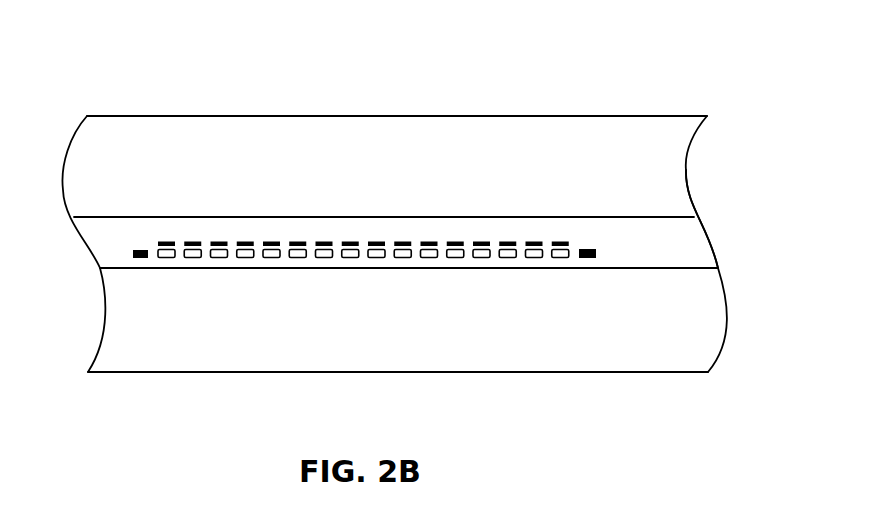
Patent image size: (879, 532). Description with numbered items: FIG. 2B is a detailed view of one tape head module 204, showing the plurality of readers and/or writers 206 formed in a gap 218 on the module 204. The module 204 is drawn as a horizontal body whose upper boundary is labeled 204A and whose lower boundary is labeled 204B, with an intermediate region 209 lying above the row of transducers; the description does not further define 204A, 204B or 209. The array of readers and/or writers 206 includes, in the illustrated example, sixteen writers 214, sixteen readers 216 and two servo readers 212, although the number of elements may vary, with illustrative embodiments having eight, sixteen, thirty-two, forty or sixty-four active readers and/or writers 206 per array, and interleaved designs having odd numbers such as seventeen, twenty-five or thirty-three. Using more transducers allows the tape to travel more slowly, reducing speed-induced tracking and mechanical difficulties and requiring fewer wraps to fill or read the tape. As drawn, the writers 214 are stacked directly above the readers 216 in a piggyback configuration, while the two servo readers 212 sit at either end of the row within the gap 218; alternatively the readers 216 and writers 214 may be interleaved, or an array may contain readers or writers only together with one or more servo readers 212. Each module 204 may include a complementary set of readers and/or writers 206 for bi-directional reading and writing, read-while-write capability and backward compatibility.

The module 204 is at (100, 86).
The top surface of light guide 204A is at (193, 116).
The bottom surface of light guide 204B is at (243, 373).
The readers and/or writers 206 is at (620, 238).
The upper layer region 209 is at (323, 183).
The servo readers 212 is at (133, 253).
The writers 214 is at (480, 242).
The readers 216 is at (483, 258).
The gap 218 is at (708, 243).